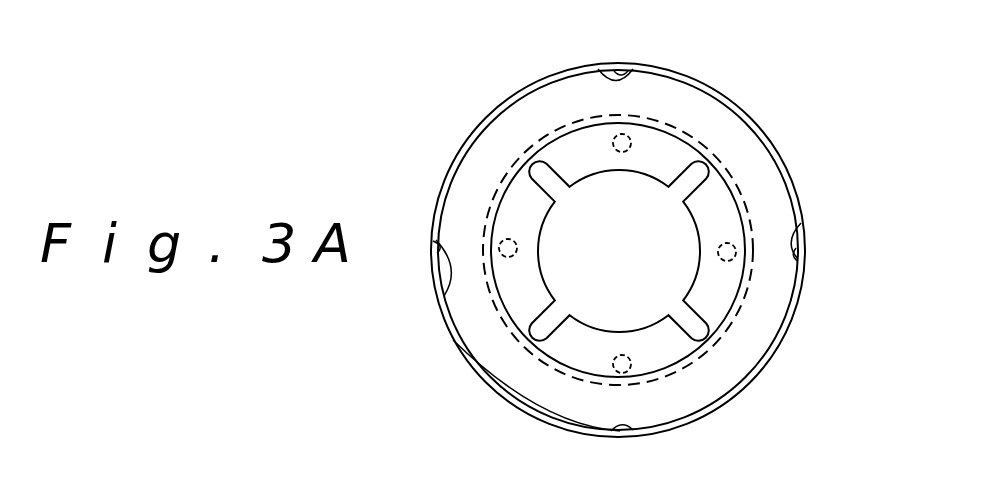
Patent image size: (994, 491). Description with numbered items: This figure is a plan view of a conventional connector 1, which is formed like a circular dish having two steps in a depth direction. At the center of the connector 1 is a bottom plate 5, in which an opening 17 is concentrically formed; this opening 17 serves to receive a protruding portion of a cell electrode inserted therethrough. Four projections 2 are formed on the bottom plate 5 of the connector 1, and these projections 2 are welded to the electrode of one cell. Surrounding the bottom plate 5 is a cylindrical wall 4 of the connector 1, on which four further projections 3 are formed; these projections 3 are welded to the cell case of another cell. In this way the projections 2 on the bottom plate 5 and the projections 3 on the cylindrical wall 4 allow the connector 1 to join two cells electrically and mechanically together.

The connector 1 is at (777, 115).
The projections 2 is at (718, 251).
The projections 3 is at (610, 80).
The cylindrical wall 4 is at (793, 322).
The bottom plate 5 is at (661, 359).
The opening 17 is at (650, 205).